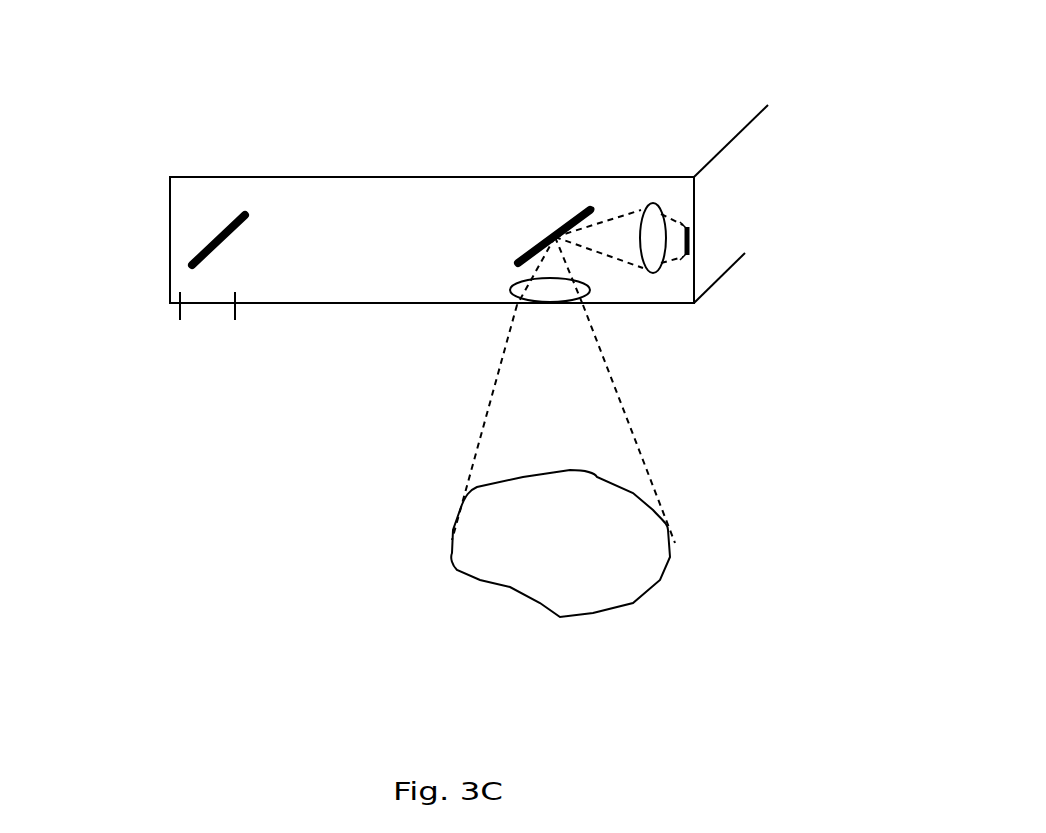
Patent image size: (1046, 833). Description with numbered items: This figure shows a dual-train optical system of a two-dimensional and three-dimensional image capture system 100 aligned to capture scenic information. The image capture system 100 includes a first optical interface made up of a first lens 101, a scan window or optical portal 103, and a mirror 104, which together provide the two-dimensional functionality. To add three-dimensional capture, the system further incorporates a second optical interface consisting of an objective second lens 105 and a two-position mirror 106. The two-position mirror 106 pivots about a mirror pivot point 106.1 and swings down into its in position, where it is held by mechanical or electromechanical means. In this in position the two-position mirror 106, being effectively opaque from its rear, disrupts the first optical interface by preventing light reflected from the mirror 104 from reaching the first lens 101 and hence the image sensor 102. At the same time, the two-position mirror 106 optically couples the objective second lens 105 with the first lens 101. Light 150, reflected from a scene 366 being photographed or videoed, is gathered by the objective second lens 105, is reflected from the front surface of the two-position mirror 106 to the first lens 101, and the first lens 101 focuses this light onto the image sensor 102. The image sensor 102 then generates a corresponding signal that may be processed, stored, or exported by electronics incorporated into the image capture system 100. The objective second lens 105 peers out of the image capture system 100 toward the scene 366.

The image capture system 100 is at (170, 177).
The first lens 101 is at (657, 276).
The image sensor 102 is at (697, 242).
The optical portal 103 is at (207, 323).
The mirror 104 is at (215, 235).
The second lens 105 is at (503, 305).
The two-position mirror 106 is at (557, 232).
The mirror pivot point 106.1 is at (598, 205).
The light 150 is at (548, 422).
The scene 366 is at (542, 586).